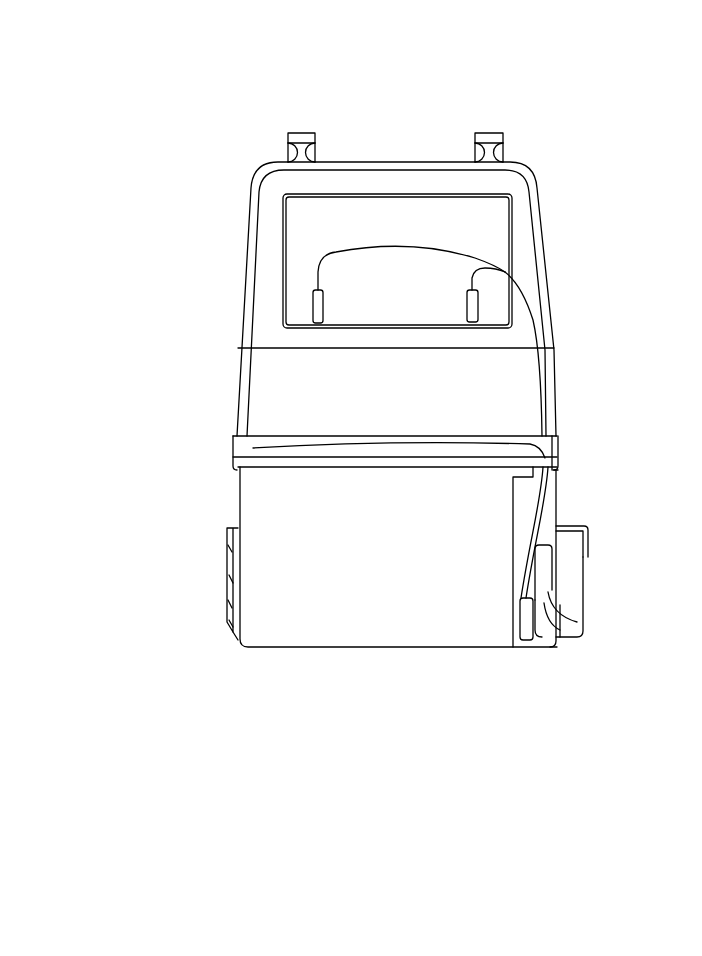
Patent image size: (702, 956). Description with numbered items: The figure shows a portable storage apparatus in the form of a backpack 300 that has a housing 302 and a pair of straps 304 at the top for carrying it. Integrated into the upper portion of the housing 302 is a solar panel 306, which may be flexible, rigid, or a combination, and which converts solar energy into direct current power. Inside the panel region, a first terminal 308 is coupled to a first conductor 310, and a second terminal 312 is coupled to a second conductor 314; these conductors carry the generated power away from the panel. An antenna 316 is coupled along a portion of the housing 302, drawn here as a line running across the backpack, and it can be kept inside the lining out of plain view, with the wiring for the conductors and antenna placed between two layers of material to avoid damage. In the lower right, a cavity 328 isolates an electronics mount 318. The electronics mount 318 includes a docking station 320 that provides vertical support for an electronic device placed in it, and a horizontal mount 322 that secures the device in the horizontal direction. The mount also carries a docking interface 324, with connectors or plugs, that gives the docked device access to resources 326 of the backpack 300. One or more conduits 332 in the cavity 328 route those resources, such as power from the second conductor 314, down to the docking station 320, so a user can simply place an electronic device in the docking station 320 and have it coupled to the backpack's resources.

The backpack 300 is at (168, 128).
The housing 302 is at (545, 204).
The straps 304 is at (316, 138).
The solar panel 306 is at (282, 213).
The first terminal 308 is at (313, 306).
The first conductor 310 is at (318, 270).
The second terminal 312 is at (478, 306).
The second conductor 314 is at (497, 272).
The antenna 316 is at (278, 446).
The electronics mount 318 is at (583, 585).
The docking station 320 is at (573, 625).
The horizontal mount 322 is at (586, 527).
The docking interface 324 is at (525, 622).
The resources 326 is at (537, 640).
The cavity 328 is at (545, 513).
The conduits 332 is at (558, 458).